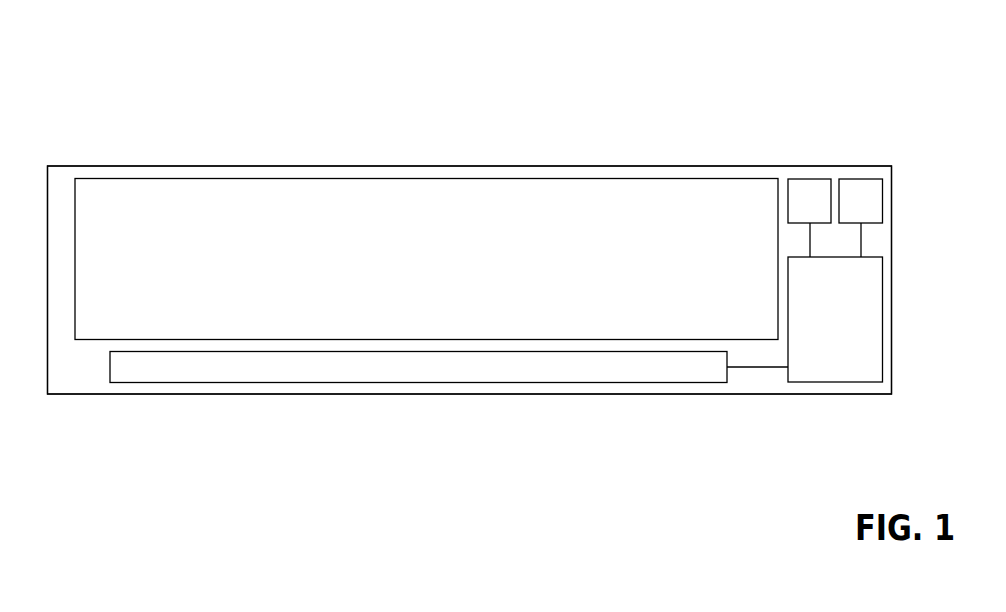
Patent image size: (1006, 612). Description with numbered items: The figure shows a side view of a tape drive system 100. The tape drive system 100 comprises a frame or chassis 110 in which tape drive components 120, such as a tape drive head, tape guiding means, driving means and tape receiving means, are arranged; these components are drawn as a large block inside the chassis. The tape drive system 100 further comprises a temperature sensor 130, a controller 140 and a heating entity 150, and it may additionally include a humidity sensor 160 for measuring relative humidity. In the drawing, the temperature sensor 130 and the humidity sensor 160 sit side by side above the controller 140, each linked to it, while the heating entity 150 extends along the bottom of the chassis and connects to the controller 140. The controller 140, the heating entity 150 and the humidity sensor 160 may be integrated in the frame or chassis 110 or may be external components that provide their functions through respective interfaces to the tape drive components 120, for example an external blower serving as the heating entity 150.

The tape drive system 100 is at (802, 133).
The frame or chassis 110 is at (489, 166).
The tape drive components 120 is at (564, 178).
The temperature sensor 130 is at (810, 179).
The controller 140 is at (882, 343).
The heating entity 150 is at (467, 383).
The humidity sensor 160 is at (882, 193).